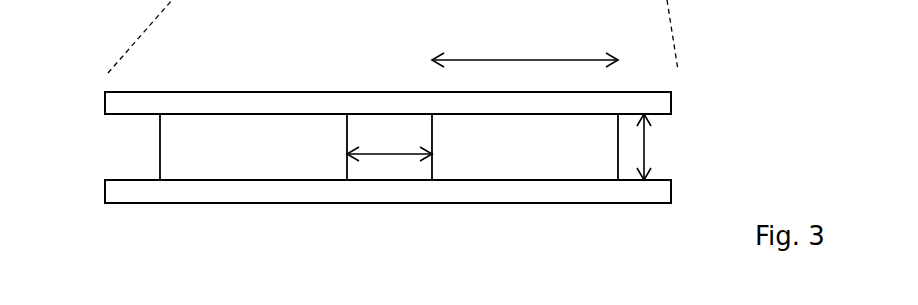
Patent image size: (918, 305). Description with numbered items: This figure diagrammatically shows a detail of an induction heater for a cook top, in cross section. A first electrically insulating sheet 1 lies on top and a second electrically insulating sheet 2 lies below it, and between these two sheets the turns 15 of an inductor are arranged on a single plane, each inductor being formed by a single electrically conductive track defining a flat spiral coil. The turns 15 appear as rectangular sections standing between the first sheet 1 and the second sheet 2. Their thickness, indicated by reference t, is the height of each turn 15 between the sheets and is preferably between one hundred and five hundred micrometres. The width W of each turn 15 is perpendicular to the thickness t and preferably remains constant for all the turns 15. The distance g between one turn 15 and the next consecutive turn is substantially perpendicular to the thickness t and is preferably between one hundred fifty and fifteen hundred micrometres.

The first electrically insulating sheet 1 is at (106, 100).
The second electrically insulating sheet 2 is at (123, 187).
The turns 15 is at (278, 150).
The width W is at (527, 58).
The distance g is at (400, 156).
The thickness t is at (663, 150).